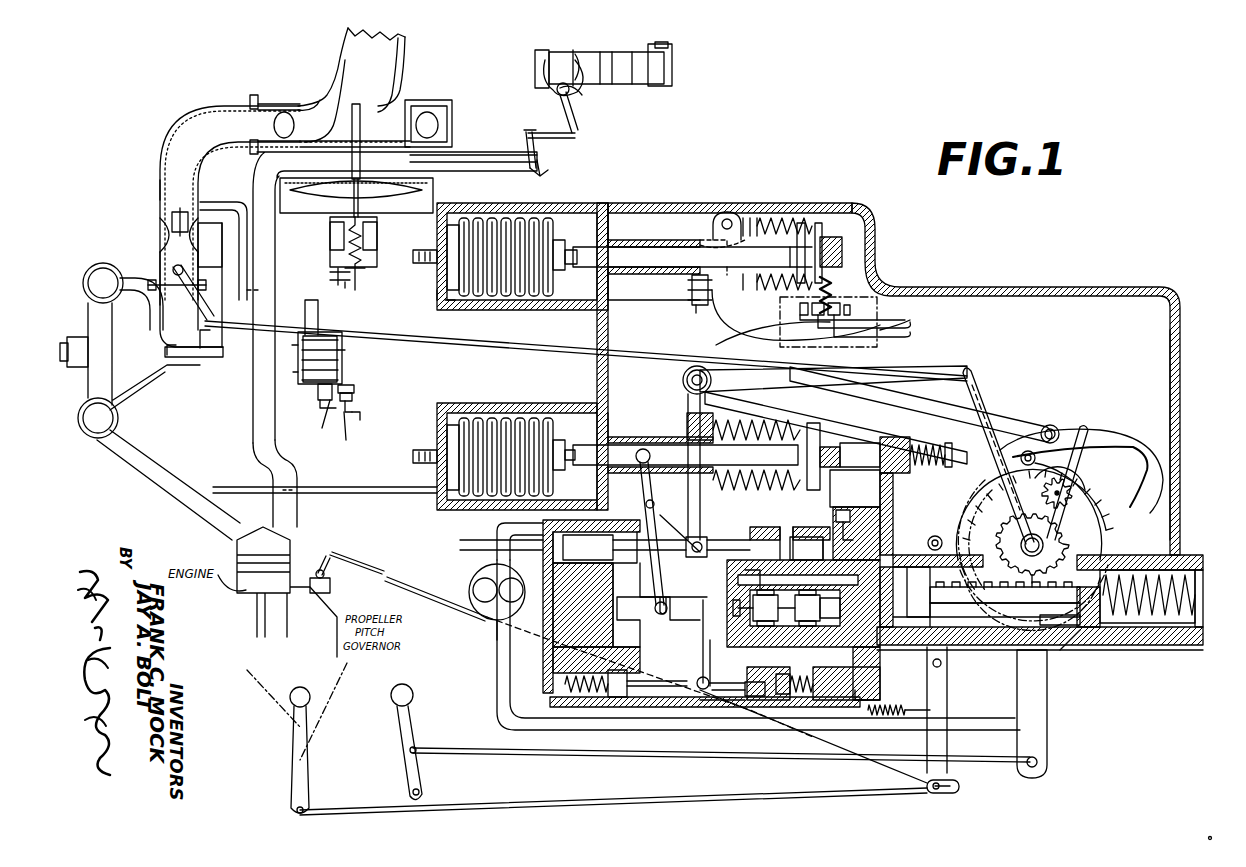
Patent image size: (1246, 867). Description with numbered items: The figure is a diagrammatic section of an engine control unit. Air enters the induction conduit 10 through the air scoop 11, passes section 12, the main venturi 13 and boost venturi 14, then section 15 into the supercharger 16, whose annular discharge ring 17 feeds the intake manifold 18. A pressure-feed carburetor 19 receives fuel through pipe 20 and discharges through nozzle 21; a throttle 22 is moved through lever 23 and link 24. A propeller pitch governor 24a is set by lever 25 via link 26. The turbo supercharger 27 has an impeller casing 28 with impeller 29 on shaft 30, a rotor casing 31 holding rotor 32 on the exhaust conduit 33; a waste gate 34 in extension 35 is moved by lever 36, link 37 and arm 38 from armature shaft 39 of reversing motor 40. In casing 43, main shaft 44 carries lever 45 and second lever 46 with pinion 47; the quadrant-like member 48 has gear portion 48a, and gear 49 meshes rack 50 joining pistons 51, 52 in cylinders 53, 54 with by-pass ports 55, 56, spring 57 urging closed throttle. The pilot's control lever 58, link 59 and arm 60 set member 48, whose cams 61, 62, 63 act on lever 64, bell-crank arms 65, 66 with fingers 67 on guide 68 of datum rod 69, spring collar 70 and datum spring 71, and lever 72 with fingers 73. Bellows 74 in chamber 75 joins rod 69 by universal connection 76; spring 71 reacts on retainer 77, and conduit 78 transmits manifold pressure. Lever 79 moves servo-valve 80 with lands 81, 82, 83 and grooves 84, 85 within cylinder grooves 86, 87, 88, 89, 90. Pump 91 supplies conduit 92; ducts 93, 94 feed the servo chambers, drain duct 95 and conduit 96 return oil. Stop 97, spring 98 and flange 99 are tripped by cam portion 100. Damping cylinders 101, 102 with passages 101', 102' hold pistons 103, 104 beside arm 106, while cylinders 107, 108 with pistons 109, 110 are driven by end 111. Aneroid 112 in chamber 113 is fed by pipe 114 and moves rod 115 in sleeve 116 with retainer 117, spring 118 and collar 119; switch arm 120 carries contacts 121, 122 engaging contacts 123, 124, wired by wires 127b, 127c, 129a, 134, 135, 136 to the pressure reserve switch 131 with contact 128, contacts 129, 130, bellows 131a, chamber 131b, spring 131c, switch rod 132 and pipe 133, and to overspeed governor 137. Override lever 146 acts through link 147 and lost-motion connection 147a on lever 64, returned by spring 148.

The induction conduit 10 is at (162, 133).
The air inlet or scoop 11 is at (392, 46).
The section of induction conduit 12 is at (203, 117).
The main venturi 13 is at (165, 232).
The boost venturi 14 is at (172, 215).
The section of induction conduit 15 is at (156, 380).
The supercharger 16 is at (86, 334).
The annular discharge ring 17 is at (92, 280).
The intake manifold 18 is at (125, 450).
The carburetor 19 is at (222, 270).
The pipe 20 is at (240, 208).
The nozzle 21 is at (196, 363).
The throttle 22 is at (162, 265).
The lever 23 is at (180, 288).
The link 24 is at (548, 338).
The propeller pitch governor 24a is at (400, 611).
The lever 25 is at (322, 556).
The link 26 is at (412, 590).
The turbo-type supercharger 27 is at (320, 105).
The impeller casing 28 is at (432, 102).
The impeller 29 is at (280, 112).
The shaft 30 is at (365, 110).
The rotor casing 31 is at (380, 228).
The turbine or rotor 32 is at (425, 196).
The exhaust conduit 33 is at (268, 357).
The waste or blast gate 34 is at (545, 172).
The extension of exhaust conduit 35 is at (468, 150).
The lever 36 is at (522, 138).
The link 37 is at (578, 138).
The arm 38 is at (573, 118).
The armature shaft 39 is at (546, 72).
The motor 40 is at (550, 52).
The casing 43 is at (1120, 292).
The main shaft 44 is at (1043, 545).
The lever 45 is at (990, 382).
The second lever 46 is at (1080, 478).
The spur gear or pinion 47 is at (1072, 490).
The quadrant-like member 48 is at (1072, 545).
The internally-toothed segment or gear portion 48a is at (975, 535).
The gear 49 is at (1112, 525).
The gear rack 50 is at (1000, 648).
The servo-motor piston 51 is at (1090, 645).
The servo-motor piston 52 is at (975, 600).
The cylinder 53 is at (890, 630).
The cylinder 54 is at (1208, 625).
The oil by-pass port 55 is at (918, 650).
The oil by-pass port 56 is at (1040, 570).
The spring 57 is at (1170, 622).
The control lever 58 is at (420, 725).
The link 59 is at (560, 752).
The arm 60 is at (1040, 718).
The cam 61 is at (940, 495).
The cam 62 is at (1122, 445).
The cam 63 is at (1115, 428).
The pivoted lever 64 is at (950, 695).
The arm of bell crank 65 is at (785, 395).
The arm of bell crank 66 is at (690, 393).
The fingers 67 is at (690, 440).
The cylindrical guide 68 is at (622, 440).
The datum rod 69 is at (660, 470).
The spring collar 70 is at (710, 475).
The boost control datum spring 71 is at (750, 420).
The pivoted lever 72 is at (1010, 423).
The fingers 73 is at (712, 232).
The sealed corrugated bellows 74 is at (475, 410).
The chamber 75 is at (540, 408).
The universal connection 76 is at (576, 450).
The spring retainer 77 is at (835, 422).
The pressure-transmitting pipe or conduit 78 is at (396, 494).
The pivoted lever 79 is at (640, 515).
The servo-motor control valve 80 is at (680, 620).
The land 81 is at (770, 582).
The land 82 is at (765, 608).
The land 83 is at (830, 608).
The groove 84 is at (750, 608).
The groove 85 is at (799, 608).
The groove 86 is at (725, 596).
The groove 87 is at (750, 585).
The groove 88 is at (750, 545).
The groove 89 is at (768, 535).
The groove 90 is at (786, 527).
The pump 91 is at (497, 618).
The pipe or conduit 92 is at (497, 660).
The duct 93 is at (932, 538).
The duct 94 is at (1130, 650).
The drain duct 95 is at (748, 680).
The pipe or conduit 96 is at (497, 528).
The slidable stop 97 is at (850, 440).
The spring 98 is at (935, 440).
The flange 99 is at (963, 458).
The cam portion 100 is at (1084, 425).
The cylinder 101 is at (698, 687).
The restricted passage 101' is at (656, 605).
The cylinder 102 is at (813, 697).
The restricted passage 102' is at (718, 714).
The damping piston 103 is at (612, 698).
The damping piston 104 is at (788, 702).
The arm 106 is at (703, 635).
The cylinder 107 is at (501, 533).
The cylinder 108 is at (843, 506).
The piston 109 is at (501, 549).
The piston 110 is at (822, 540).
The end of arm 111 is at (698, 535).
The bellows or aneroid 112 is at (490, 212).
The chamber 113 is at (556, 210).
The pressure-transmitting pipe 114 is at (440, 290).
The rod 115 is at (716, 268).
The guide sleeve 116 is at (645, 235).
The spring retainer 117 is at (830, 236).
The carburetor intake pressure datum spring 118 is at (798, 222).
The sleeved collar 119 is at (758, 222).
The switch arm 120 is at (872, 225).
The contact 121 is at (725, 345).
The contact 122 is at (845, 303).
The contact 123 is at (730, 296).
The contact 124 is at (842, 310).
The wire 127b is at (918, 330).
The branch wire 127c is at (354, 408).
The contact 128 is at (318, 398).
The contact 129 is at (350, 388).
The wire 129a is at (353, 396).
The contact 130 is at (348, 430).
The pressure reserve switch 131 is at (300, 365).
The bellows 131a is at (348, 352).
The chamber 131b is at (295, 343).
The spring 131c is at (298, 372).
The switch rod 132 is at (326, 412).
The pipe 133 is at (321, 310).
The wire 134 is at (893, 340).
The wire 135 is at (892, 318).
The wire 136 is at (362, 418).
The overspeed governor 137 is at (358, 250).
The lever 146 is at (306, 722).
The link 147 is at (650, 788).
The lost-motion connection 147a is at (960, 790).
The spring 148 is at (935, 722).